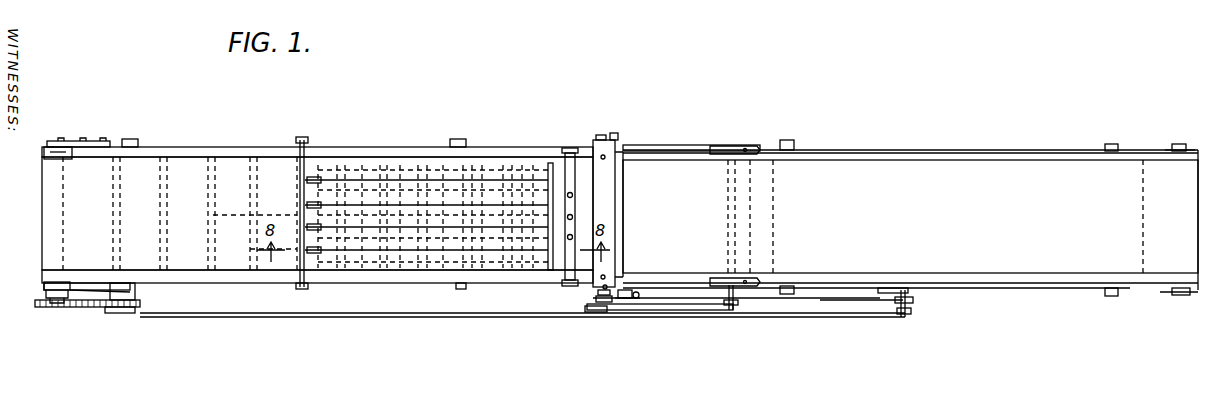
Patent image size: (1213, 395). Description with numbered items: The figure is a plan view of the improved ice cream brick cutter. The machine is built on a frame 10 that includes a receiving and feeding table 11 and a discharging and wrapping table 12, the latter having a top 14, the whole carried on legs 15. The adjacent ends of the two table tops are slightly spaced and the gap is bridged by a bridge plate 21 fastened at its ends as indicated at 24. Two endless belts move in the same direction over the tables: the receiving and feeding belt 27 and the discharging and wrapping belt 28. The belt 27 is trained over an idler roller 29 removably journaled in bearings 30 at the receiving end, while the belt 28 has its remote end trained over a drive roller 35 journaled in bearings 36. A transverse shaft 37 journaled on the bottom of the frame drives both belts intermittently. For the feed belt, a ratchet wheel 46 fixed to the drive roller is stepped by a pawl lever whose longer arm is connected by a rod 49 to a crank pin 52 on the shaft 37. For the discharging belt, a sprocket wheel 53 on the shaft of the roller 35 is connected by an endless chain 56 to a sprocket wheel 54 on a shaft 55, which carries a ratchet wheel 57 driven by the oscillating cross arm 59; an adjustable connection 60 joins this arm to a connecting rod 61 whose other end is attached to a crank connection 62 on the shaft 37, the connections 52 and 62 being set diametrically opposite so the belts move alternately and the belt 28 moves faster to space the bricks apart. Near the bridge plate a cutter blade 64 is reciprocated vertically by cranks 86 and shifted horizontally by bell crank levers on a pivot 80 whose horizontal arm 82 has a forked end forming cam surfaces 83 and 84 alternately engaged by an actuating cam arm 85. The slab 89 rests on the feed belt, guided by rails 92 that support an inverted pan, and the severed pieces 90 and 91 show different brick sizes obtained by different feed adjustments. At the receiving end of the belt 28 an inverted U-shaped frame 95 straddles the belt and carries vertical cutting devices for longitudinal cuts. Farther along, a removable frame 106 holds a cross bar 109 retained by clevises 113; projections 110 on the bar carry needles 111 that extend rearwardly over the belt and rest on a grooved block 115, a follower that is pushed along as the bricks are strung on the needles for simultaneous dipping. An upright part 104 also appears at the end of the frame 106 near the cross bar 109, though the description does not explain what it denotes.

The frame 10 is at (977, 299).
The receiving and feeding table 11 is at (962, 143).
The discharging and wrapping table 12 is at (378, 139).
The table top 14 is at (182, 272).
The legs 15 is at (1112, 297).
The bridge plate 21 is at (623, 218).
The plate fastening 24 is at (601, 285).
The receiving and feeding belt 27 is at (1040, 277).
The discharging and wrapping belt 28 is at (232, 272).
The idler roller 29 is at (1178, 148).
The bearings 30 is at (1180, 296).
The drive roller 35 is at (44, 145).
The bearings 36 is at (82, 142).
The shaft 37 is at (898, 288).
The ratchet wheel 46 is at (630, 296).
The rod 49 is at (822, 300).
The crank pin 52 is at (912, 303).
The sprocket wheel 53 is at (42, 304).
The sprocket wheel 54 is at (142, 308).
The shaft 55 is at (114, 318).
The drive chain 56 is at (76, 310).
The ratchet wheel 57 is at (112, 310).
The cross arm 59 is at (116, 312).
The adjustable connection 60 is at (119, 314).
The connecting rod 61 is at (355, 320).
The crank connection 62 is at (902, 318).
The cutter blade 64 is at (618, 176).
The pivot 80 is at (738, 305).
The horizontal arm 82 is at (672, 311).
The cam surface 83 is at (590, 309).
The cam surface 84 is at (603, 313).
The actuating cam arm 85 is at (612, 312).
The cranks 86 is at (600, 290).
The slab 89 is at (776, 212).
The severed pieces 90 is at (212, 228).
The severed pieces 91 is at (437, 262).
The rails 92 is at (910, 156).
The frame 95 is at (571, 160).
The rod 104 is at (306, 135).
The removable frame 106 is at (310, 270).
The cross bar 109 is at (306, 181).
The projections 110 is at (306, 206).
The needles 111 is at (515, 205).
The clevises 113 is at (299, 288).
The grooved block 115 is at (546, 258).